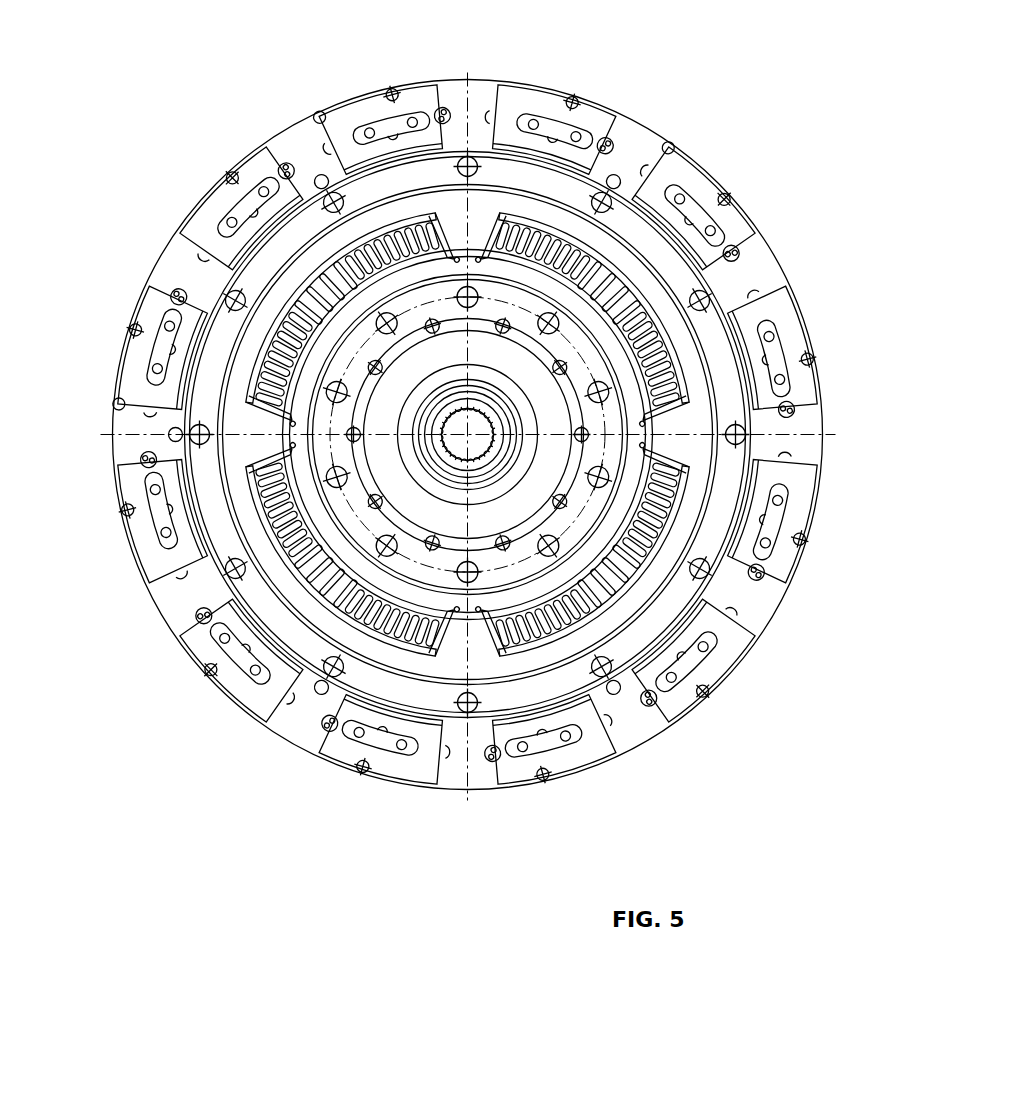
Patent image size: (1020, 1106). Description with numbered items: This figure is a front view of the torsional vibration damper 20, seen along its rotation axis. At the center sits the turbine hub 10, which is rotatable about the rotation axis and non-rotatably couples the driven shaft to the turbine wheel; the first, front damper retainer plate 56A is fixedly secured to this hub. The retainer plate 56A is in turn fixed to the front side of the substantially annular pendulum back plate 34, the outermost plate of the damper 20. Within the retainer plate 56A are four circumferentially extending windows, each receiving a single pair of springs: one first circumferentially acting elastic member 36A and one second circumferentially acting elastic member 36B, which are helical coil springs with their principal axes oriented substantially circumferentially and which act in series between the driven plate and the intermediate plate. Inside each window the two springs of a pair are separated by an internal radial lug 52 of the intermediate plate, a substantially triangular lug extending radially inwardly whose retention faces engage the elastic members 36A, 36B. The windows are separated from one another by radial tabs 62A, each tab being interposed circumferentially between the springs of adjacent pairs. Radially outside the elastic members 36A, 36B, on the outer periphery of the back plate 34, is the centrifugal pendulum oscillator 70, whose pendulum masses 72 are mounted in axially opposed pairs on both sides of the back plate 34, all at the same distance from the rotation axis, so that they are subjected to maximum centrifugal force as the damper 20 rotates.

The turbine hub 10 is at (621, 435).
The torsional vibration damper 20 is at (468, 406).
The pendulum back plate 34 is at (411, 413).
The first circumferentially acting elastic members 36A is at (392, 434).
The second circumferentially acting elastic members 36B is at (467, 524).
The internal radial lugs 52 is at (484, 530).
The first, front damper retainer plate 56A is at (543, 435).
The radial tabs 62A is at (467, 431).
The centrifugal pendulum oscillator 70 is at (468, 428).
The pendulum masses 72 is at (443, 400).